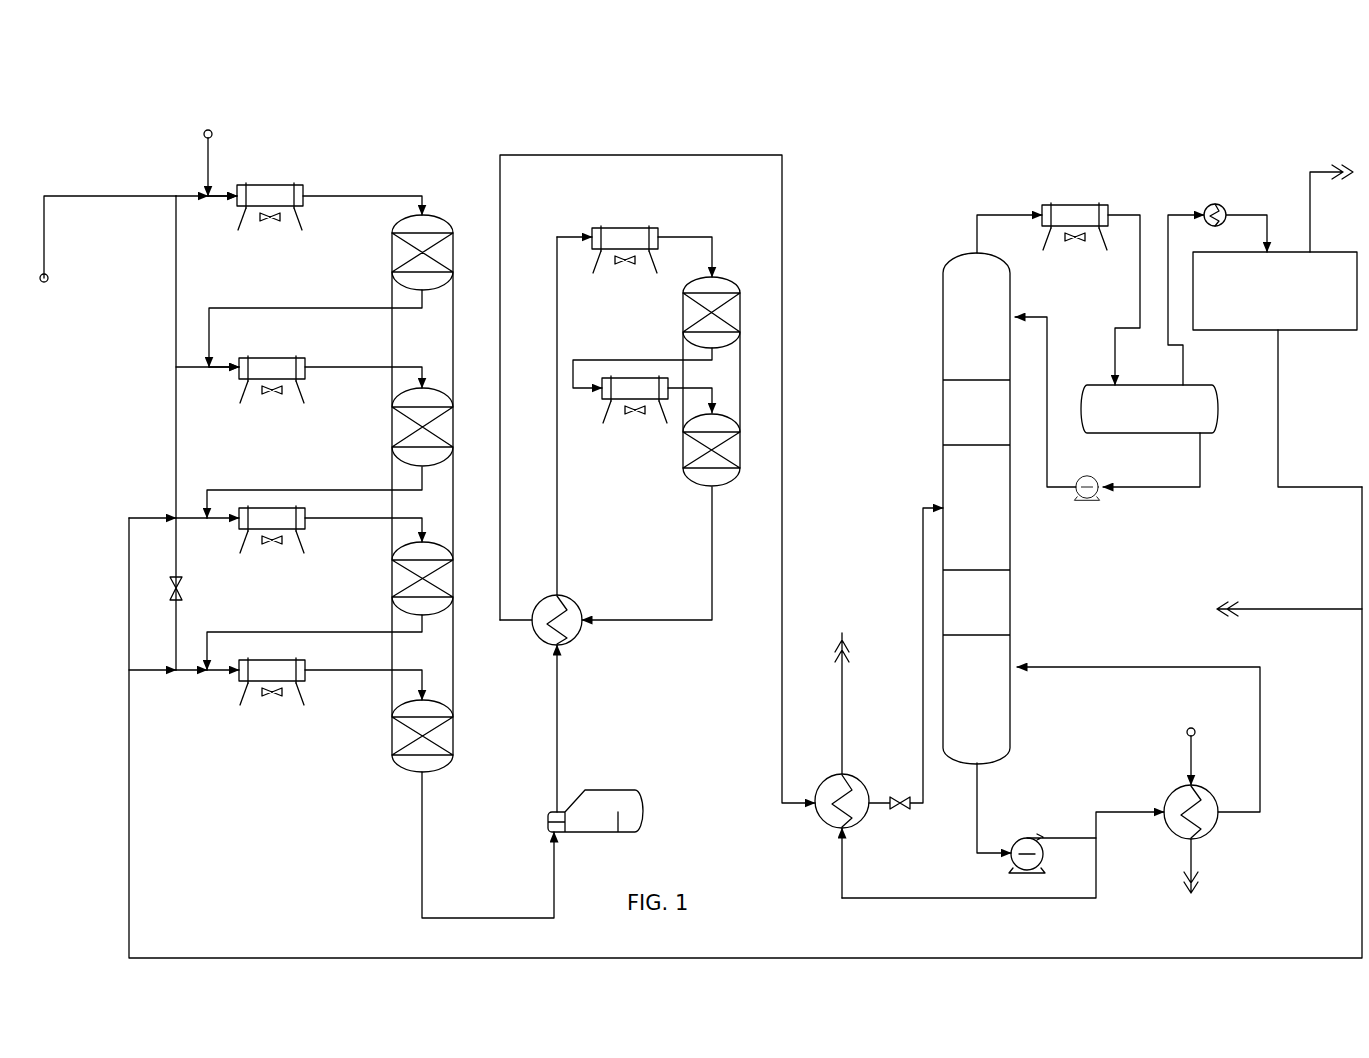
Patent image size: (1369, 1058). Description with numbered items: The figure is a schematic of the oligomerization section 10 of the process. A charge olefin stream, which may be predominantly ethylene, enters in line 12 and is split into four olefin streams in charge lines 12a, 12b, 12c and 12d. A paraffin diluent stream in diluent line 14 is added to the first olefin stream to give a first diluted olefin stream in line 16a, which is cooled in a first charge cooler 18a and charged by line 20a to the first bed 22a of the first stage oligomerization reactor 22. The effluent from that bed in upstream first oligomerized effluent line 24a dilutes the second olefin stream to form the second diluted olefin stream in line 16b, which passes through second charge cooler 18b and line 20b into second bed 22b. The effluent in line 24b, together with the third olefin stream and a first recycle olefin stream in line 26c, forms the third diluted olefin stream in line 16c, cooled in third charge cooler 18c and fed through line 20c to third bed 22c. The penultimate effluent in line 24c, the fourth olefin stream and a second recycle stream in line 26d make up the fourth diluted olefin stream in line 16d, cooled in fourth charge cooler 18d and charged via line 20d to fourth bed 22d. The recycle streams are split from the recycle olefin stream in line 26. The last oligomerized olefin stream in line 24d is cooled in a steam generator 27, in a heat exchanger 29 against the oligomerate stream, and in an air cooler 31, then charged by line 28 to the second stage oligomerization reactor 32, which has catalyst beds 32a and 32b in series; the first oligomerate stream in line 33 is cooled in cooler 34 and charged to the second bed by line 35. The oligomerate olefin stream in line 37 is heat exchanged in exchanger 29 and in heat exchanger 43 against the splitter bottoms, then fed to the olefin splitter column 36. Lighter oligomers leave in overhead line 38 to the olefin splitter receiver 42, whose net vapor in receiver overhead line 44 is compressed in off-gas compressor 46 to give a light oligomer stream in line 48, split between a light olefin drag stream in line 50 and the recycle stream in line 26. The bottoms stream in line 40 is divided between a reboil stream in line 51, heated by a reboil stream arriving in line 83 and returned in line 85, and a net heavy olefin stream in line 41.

The oligomerization section 10 is at (223, 72).
The charge olefin stream line 12 is at (46, 214).
The first charge line 12a is at (190, 190).
The second charge line 12b is at (196, 370).
The third charge line 12c is at (196, 522).
The fourth charge line 12d is at (184, 675).
The diluent line 14 is at (210, 160).
The first diluted olefin stream line 16a is at (212, 198).
The second diluted olefin stream line 16b is at (224, 370).
The third diluted olefin stream line 16c is at (220, 522).
The fourth diluted olefin stream line 16d is at (220, 675).
The first charge cooler 18a is at (265, 185).
The second charge cooler 18b is at (272, 358).
The third charge cooler 18c is at (270, 508).
The fourth charge cooler 18d is at (265, 662).
The first cooled diluted olefin stream line 20a is at (362, 198).
The second cooled diluted olefin stream line 20b is at (366, 369).
The third cooled diluted olefin stream line 20c is at (376, 522).
The fourth cooled diluted olefin stream line 20d is at (370, 672).
The first stage oligomerization reactor 22 is at (411, 444).
The first bed of first stage oligomerization catalyst 22a is at (394, 243).
The second bed of first stage oligomerization catalyst 22b is at (394, 425).
The third bed of first stage oligomerization catalyst 22c is at (396, 572).
The fourth bed of first stage oligomerization catalyst 22d is at (394, 727).
The upstream first oligomerized effluent line 24a is at (262, 306).
The downstream first oligomerized effluent line 24b is at (272, 488).
The penultimate oligomerized effluent line 24c is at (278, 628).
The last oligomerized effluent line 24d is at (420, 855).
The recycle olefin stream line 26 is at (193, 955).
The first recycle olefin stream line 26c is at (146, 522).
The second recycle olefin stream line 26d is at (150, 675).
The steam generator 27 is at (618, 790).
The oligomerization charge line 28 is at (685, 240).
The heat exchanger 29 is at (578, 630).
The air cooler 31 is at (622, 228).
The second stage oligomerization reactor 32 is at (733, 359).
The first second stage oligomerization catalyst bed 32a is at (742, 320).
The second second stage oligomerization catalyst bed 32b is at (744, 458).
The first oligomerate stream line 33 is at (634, 358).
The cooler 34 is at (608, 398).
The second stage bed charge line 35 is at (714, 386).
The oligomerate olefin stream line 37 is at (712, 540).
The olefin splitter column 36 is at (943, 290).
The olefin splitter overhead line 38 is at (1005, 215).
The bottoms line 40 is at (977, 808).
The net splitter bottoms line 41 is at (882, 898).
The olefin splitter receiver 42 is at (1192, 385).
The heat exchanger 43 is at (850, 775).
The receiver overhead line 44 is at (1177, 215).
The off-gas compressor 46 is at (1318, 330).
The light oligomer stream line 48 is at (1322, 487).
The light olefin drag stream line 50 is at (1264, 609).
The reboil stream line 51 is at (1110, 812).
The jet fractionation reboil stream line 83 is at (1192, 755).
The jet fractionation return line 85 is at (1191, 856).